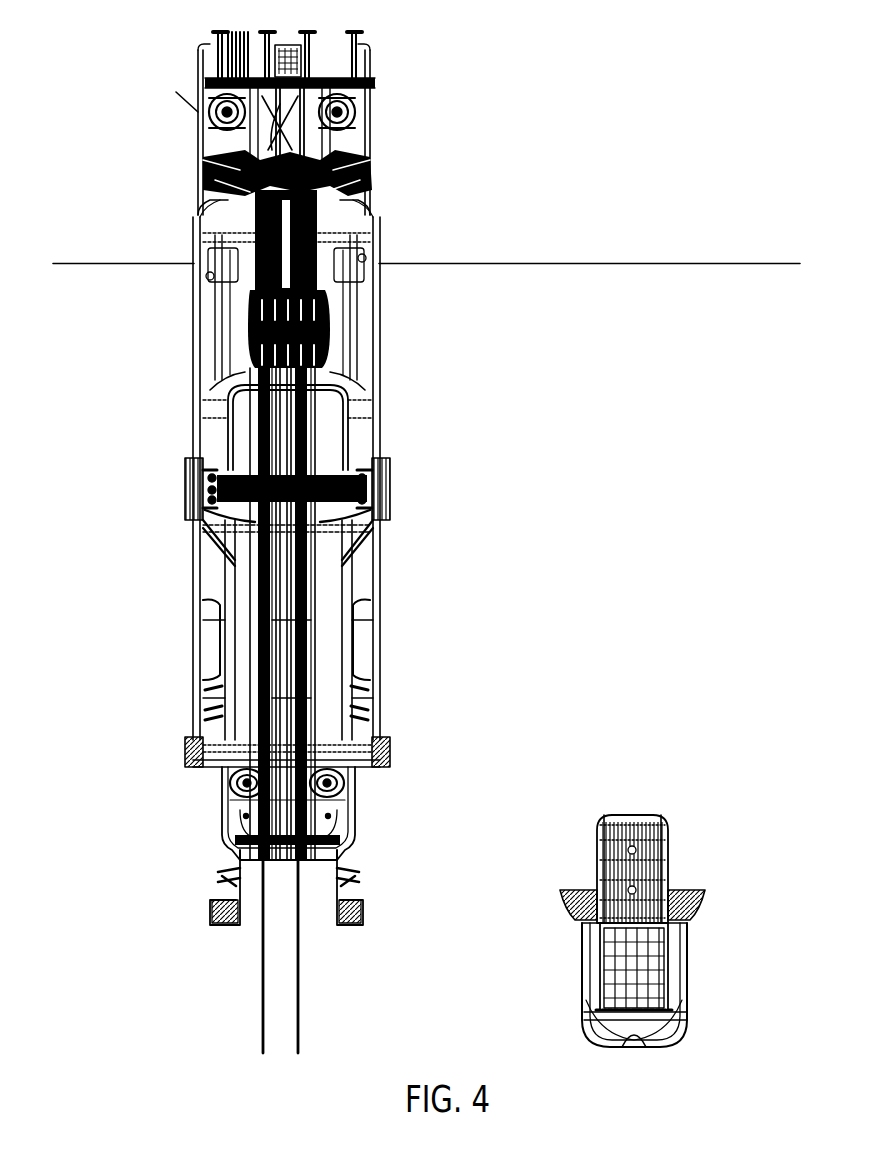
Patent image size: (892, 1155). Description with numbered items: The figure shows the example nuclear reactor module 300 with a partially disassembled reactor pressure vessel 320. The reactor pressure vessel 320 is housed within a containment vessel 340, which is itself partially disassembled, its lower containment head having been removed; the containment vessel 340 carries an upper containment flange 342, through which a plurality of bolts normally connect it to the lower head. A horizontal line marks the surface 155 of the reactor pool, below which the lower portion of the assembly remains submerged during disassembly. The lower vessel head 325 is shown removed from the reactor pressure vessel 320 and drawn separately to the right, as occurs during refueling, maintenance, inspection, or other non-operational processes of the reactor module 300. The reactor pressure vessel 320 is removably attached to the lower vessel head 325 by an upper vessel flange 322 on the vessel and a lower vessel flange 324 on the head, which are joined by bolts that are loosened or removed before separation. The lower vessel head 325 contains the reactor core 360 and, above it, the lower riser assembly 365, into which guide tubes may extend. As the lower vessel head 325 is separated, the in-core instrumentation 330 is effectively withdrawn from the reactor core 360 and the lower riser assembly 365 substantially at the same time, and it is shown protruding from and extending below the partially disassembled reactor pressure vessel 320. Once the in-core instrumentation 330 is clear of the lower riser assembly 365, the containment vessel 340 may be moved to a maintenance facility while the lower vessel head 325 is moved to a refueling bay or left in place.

The nuclear reactor module 300 is at (488, 110).
The surface of a reactor pool 155 is at (570, 263).
The containment vessel 340 is at (196, 610).
The upper containment flange 342 is at (186, 752).
The reactor pressure vessel 320 is at (350, 813).
The upper vessel flange 322 is at (360, 915).
The in-core instrumentation 330 is at (303, 1003).
The lower vessel flange 324 is at (560, 892).
The lower vessel head 325 is at (582, 995).
The reactor core 360 is at (670, 978).
The lower riser assembly 365 is at (670, 862).